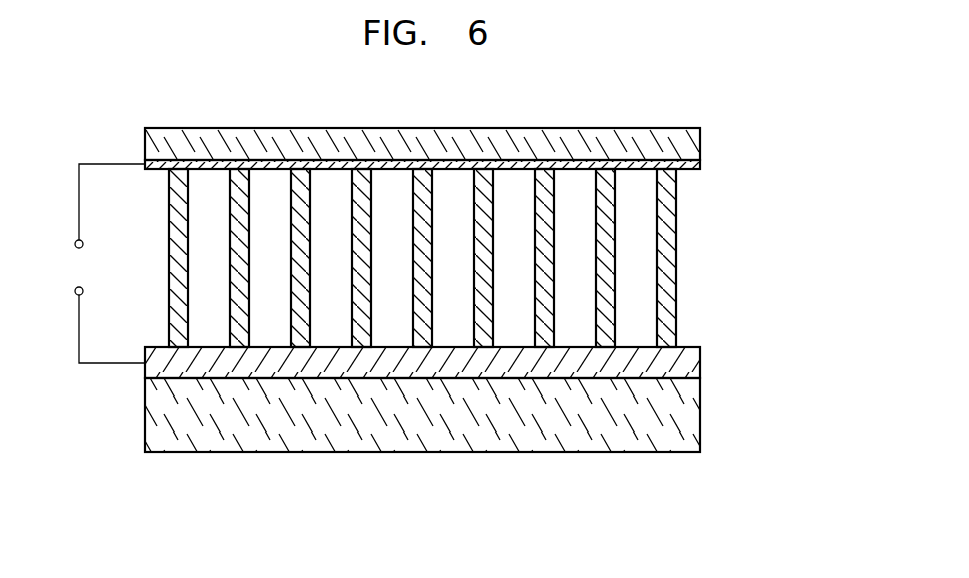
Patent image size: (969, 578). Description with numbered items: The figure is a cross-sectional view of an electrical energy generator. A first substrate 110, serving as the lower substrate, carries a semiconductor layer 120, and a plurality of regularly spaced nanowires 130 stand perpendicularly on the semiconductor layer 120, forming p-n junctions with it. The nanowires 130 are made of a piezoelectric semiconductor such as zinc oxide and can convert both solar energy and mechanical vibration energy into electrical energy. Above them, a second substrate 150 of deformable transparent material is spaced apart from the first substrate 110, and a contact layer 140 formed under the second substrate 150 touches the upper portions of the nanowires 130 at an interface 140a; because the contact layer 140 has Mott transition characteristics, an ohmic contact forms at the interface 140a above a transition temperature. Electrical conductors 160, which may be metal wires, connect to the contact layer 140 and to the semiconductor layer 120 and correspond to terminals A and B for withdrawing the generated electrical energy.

The first substrate 110 is at (700, 416).
The semiconductor layer 120 is at (700, 362).
The nanowires 130 is at (676, 247).
The contact layer 140 is at (700, 165).
The interface 140a is at (666, 170).
The second substrate 150 is at (700, 145).
The electrical conductor 160 is at (80, 152).